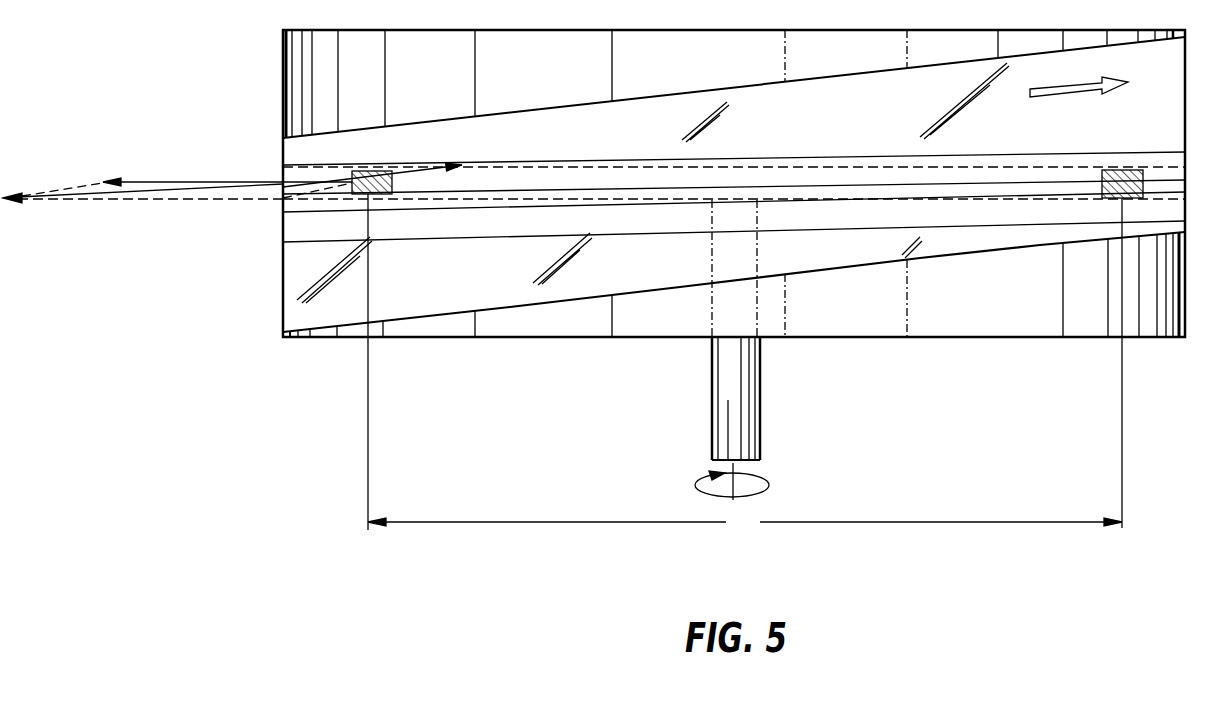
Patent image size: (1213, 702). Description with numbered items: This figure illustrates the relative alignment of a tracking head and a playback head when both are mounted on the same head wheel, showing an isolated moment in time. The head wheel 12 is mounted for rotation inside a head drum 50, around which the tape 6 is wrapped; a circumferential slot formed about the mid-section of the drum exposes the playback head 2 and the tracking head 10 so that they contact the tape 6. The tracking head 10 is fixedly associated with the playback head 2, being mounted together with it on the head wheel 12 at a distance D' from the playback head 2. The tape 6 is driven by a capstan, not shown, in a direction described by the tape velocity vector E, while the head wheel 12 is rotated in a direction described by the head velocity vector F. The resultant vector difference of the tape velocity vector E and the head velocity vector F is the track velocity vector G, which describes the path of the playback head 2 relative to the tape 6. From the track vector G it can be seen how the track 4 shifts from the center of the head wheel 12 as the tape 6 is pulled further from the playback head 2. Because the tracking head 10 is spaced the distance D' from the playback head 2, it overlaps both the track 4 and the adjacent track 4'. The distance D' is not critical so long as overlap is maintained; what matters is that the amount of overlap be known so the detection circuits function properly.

The head drum 50 is at (283, 52).
The tape 6 is at (571, 104).
The track 4 is at (734, 153).
The head wheel 12 is at (617, 200).
The adjacent track 4' is at (734, 276).
The playback head 2 is at (377, 171).
The tracking head 10 is at (1108, 170).
The tape velocity vector E is at (428, 171).
The head velocity vector F is at (217, 181).
The track velocity vector G is at (204, 197).
The direction of movement A is at (1086, 85).
The distance D' is at (745, 363).